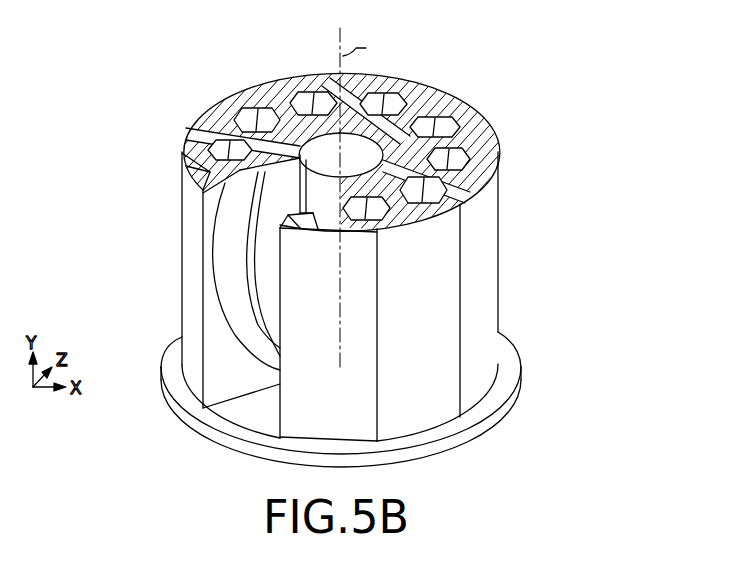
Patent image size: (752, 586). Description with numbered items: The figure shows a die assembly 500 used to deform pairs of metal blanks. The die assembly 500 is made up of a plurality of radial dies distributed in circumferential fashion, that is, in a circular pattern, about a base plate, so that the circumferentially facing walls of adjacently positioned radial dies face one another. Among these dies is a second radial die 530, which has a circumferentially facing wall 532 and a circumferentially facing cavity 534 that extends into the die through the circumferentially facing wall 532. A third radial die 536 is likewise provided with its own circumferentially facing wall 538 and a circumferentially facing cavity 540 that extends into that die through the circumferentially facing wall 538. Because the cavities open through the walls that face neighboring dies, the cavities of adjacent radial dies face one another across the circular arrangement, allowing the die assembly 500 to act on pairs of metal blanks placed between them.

The die assembly 500 is at (334, 249).
The second radial die 530 is at (303, 413).
The circumferentially facing wall 532 is at (280, 395).
The circumferentially facing cavity 534 is at (313, 190).
The third radial die 536 is at (196, 178).
The circumferentially facing wall 538 is at (213, 347).
The circumferentially facing cavity 540 is at (232, 256).